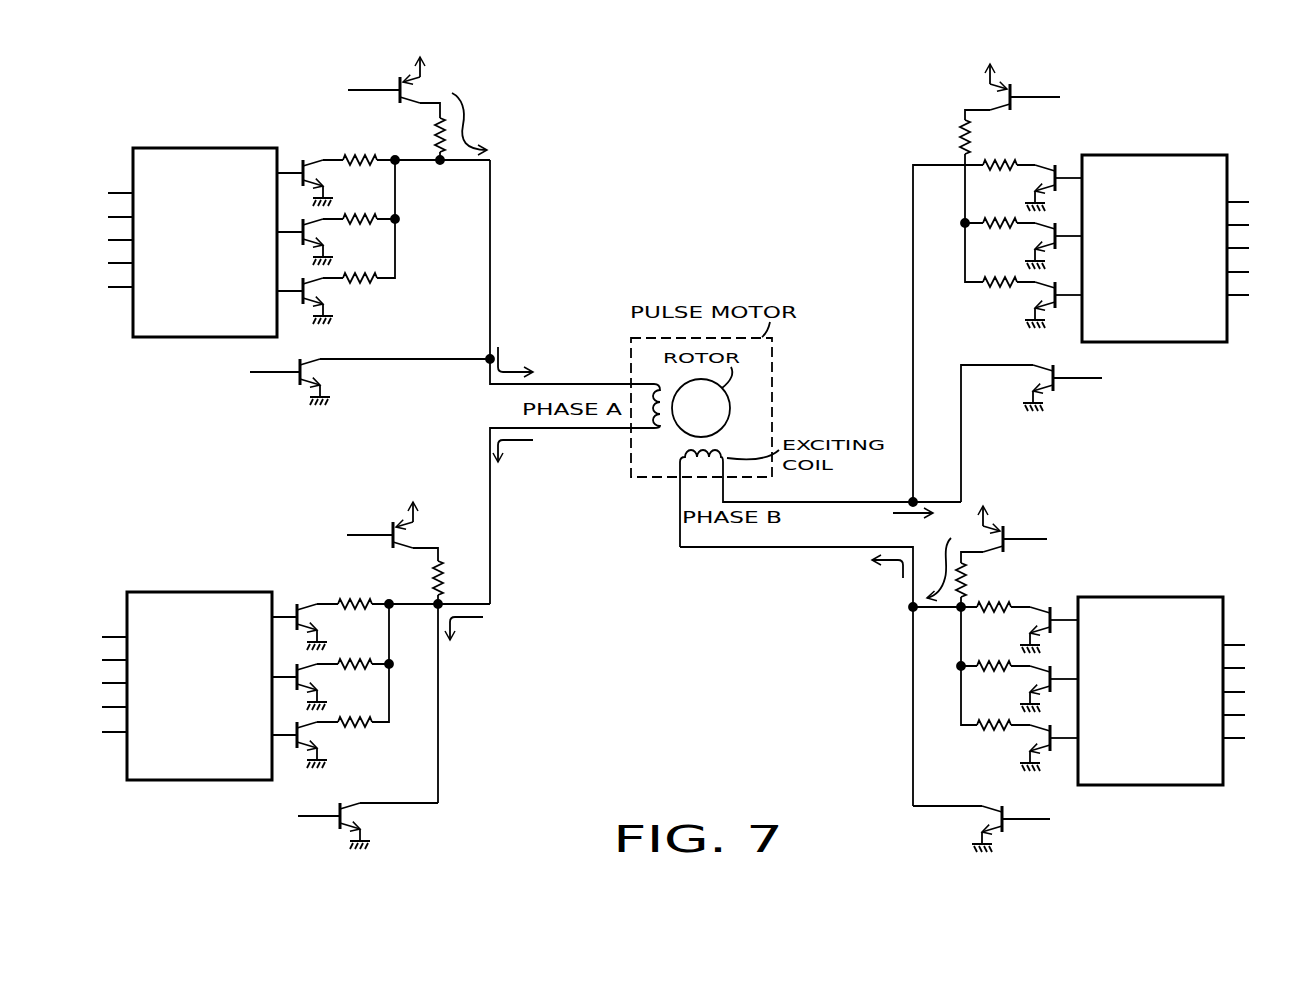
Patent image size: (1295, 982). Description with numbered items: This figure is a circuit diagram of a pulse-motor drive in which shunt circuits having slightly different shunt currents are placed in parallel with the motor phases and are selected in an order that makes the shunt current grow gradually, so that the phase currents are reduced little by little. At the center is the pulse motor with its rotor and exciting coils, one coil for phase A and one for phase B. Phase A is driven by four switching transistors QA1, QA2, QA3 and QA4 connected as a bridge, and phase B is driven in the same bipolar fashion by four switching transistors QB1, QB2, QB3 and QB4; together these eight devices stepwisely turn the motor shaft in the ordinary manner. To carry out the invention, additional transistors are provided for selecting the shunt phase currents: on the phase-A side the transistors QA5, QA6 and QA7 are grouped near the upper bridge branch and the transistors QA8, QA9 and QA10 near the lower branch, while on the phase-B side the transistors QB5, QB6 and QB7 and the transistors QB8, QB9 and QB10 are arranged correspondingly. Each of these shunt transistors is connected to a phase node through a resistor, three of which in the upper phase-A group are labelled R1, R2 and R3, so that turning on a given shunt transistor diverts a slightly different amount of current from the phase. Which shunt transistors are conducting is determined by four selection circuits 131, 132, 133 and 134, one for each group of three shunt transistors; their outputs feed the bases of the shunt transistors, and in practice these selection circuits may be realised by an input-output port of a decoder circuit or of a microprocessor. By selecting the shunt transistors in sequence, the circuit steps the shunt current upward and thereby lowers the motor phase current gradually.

The selection circuit 131 is at (208, 148).
The selection circuit 132 is at (204, 591).
The selection circuit 133 is at (1154, 153).
The selection circuit 134 is at (1158, 577).
The transistor QA1 is at (407, 107).
The transistor QA2 is at (370, 382).
The transistor QA3 is at (408, 543).
The transistor QA4 is at (368, 826).
The transistor QA5 is at (327, 183).
The transistor QA6 is at (327, 242).
The transistor QA7 is at (327, 301).
The transistor QA8 is at (324, 624).
The transistor QA9 is at (322, 684).
The transistor QA10 is at (327, 742).
The transistor QB1 is at (997, 106).
The transistor QB2 is at (1031, 433).
The transistor QB3 is at (988, 545).
The transistor QB4 is at (981, 829).
The transistor QB5 is at (1030, 185).
The transistor QB6 is at (1030, 243).
The transistor QB7 is at (1030, 302).
The transistor QB8 is at (1025, 627).
The transistor QB9 is at (1025, 686).
The transistor QB10 is at (1020, 745).
The resistor R1 is at (360, 150).
The resistor R2 is at (373, 215).
The resistor R3 is at (371, 272).